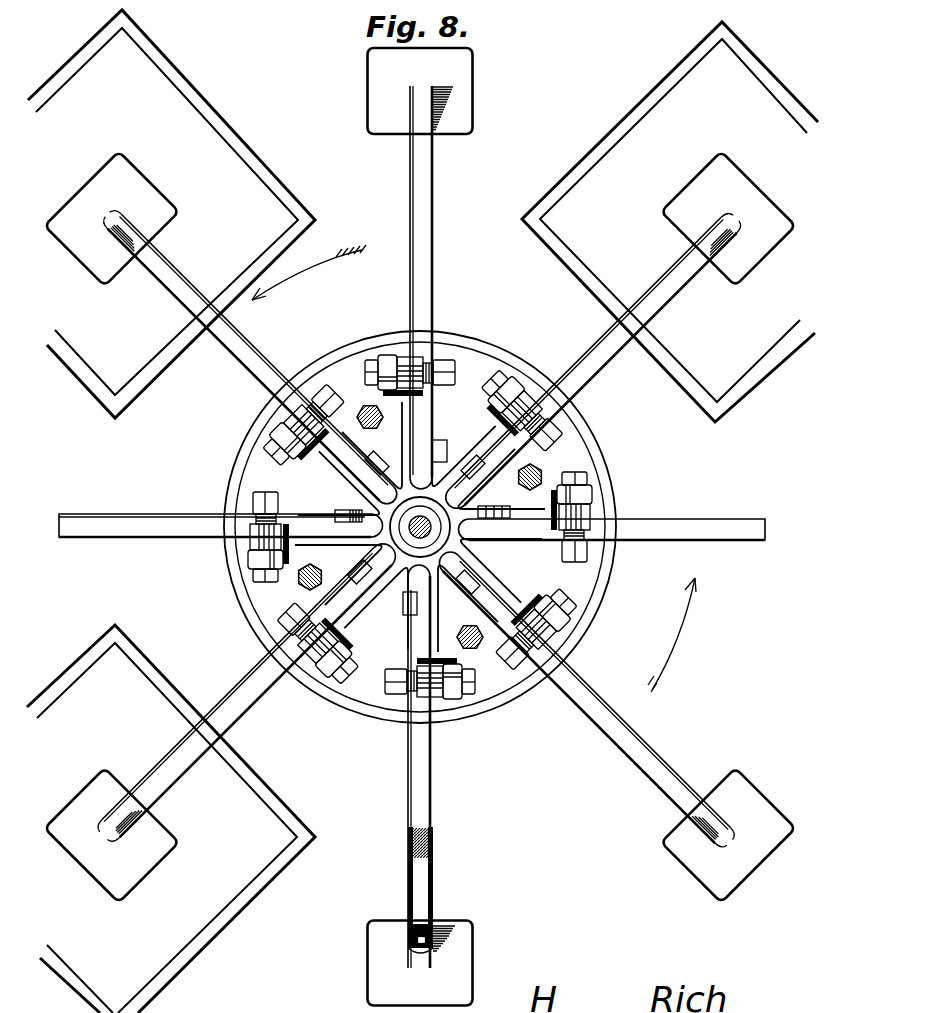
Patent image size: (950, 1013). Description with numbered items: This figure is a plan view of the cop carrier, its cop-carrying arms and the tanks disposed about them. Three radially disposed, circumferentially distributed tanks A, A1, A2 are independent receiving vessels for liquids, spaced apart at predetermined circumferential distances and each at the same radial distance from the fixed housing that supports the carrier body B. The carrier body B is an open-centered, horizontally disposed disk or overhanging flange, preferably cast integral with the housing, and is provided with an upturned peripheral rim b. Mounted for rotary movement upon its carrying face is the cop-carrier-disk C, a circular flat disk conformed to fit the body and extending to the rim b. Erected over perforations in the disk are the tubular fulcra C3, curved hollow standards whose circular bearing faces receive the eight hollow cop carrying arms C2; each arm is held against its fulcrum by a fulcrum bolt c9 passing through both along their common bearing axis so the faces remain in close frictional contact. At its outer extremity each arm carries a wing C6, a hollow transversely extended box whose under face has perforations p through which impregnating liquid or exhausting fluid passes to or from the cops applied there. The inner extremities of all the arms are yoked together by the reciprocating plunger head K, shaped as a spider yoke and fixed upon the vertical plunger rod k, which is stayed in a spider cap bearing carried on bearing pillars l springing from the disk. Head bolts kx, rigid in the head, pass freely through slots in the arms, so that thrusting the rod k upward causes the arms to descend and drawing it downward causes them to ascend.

The tank A is at (171, 819).
The tank A1 is at (171, 214).
The tank A2 is at (670, 222).
The carrier body B is at (600, 449).
The peripheral rim b is at (604, 600).
The cop-carrier-disk C is at (420, 527).
The cop carrying arm C2 is at (430, 226).
The tubular fulcrum C3 is at (405, 356).
The wing C6 is at (420, 527).
The fulcrum bolt c9 is at (336, 398).
The reciprocating plunger head K is at (372, 505).
The plunger rod k is at (419, 530).
The head bolt kx is at (424, 524).
The bearing pillar l is at (484, 652).
The perforation p is at (414, 950).